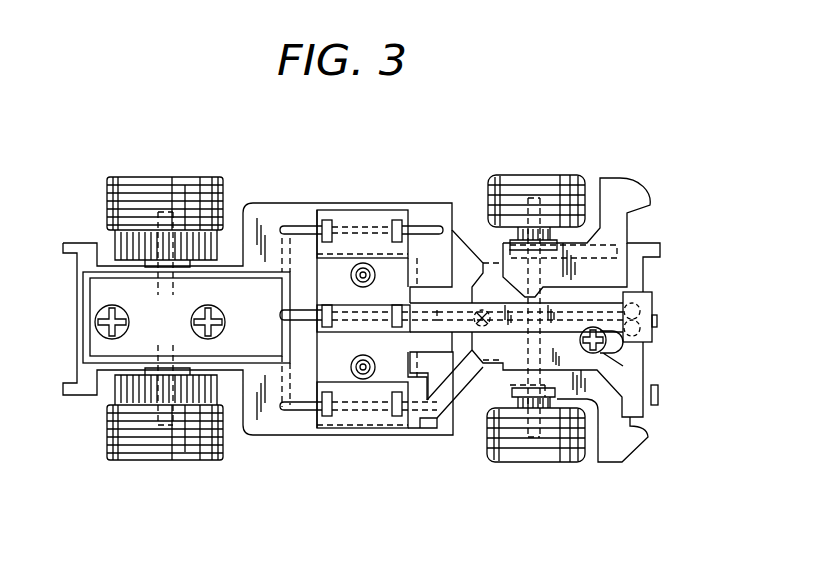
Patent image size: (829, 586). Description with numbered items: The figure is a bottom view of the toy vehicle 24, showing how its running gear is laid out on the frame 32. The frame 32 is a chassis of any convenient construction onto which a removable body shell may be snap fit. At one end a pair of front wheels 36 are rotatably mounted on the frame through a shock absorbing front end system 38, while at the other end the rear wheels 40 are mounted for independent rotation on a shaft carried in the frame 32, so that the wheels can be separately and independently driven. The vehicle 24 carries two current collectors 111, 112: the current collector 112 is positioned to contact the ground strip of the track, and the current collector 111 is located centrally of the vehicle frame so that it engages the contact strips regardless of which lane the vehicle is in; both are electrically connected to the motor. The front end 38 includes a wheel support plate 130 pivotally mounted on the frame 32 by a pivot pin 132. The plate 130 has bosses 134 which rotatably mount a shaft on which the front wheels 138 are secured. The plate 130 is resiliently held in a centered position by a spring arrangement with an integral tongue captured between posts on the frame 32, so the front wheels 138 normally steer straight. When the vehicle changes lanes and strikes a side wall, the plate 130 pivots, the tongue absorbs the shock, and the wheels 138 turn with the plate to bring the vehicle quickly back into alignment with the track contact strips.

The toy vehicle 24 is at (360, 180).
The frame 32 is at (442, 428).
The front wheels 36 is at (527, 175).
The shock absorbing front end system 38 is at (590, 342).
The rear wheels 40 is at (193, 147).
The current collector 111 is at (652, 303).
The current collector 112 is at (647, 370).
The wheel support plate 130 is at (620, 227).
The pivot pin 132 is at (484, 311).
The bosses 134 is at (507, 245).
The front wheels 138 is at (557, 177).